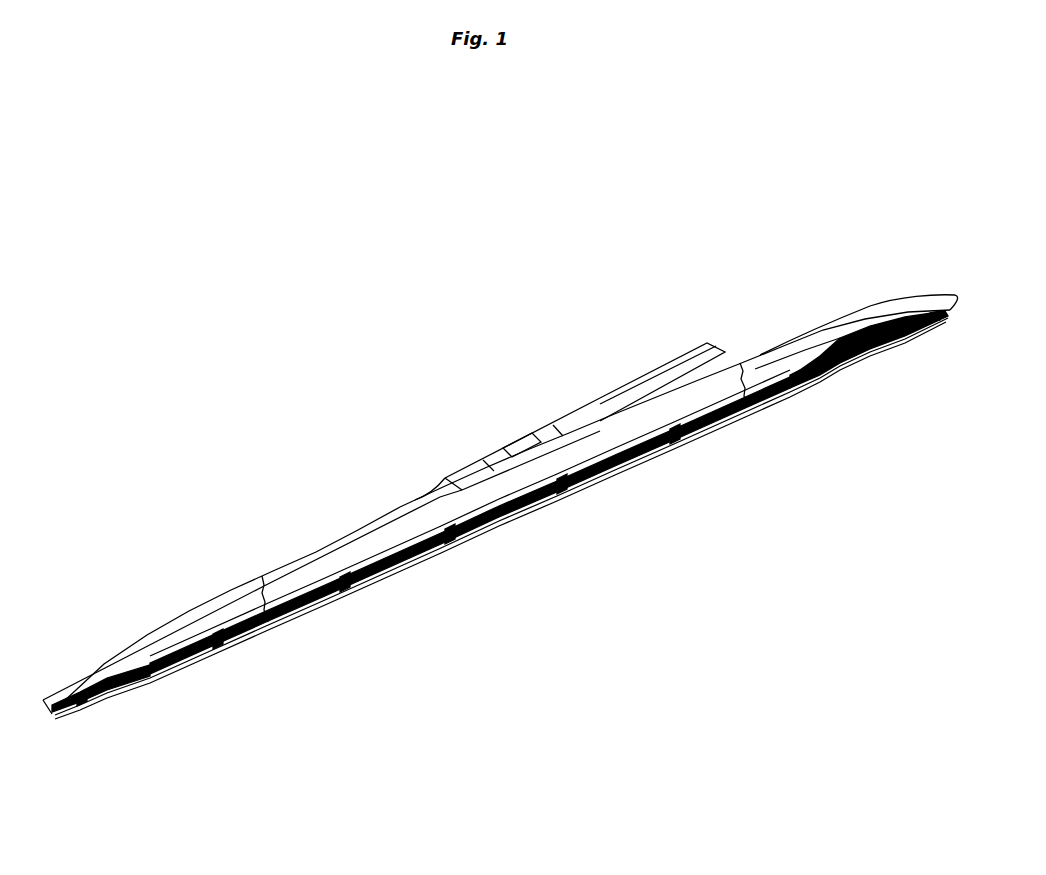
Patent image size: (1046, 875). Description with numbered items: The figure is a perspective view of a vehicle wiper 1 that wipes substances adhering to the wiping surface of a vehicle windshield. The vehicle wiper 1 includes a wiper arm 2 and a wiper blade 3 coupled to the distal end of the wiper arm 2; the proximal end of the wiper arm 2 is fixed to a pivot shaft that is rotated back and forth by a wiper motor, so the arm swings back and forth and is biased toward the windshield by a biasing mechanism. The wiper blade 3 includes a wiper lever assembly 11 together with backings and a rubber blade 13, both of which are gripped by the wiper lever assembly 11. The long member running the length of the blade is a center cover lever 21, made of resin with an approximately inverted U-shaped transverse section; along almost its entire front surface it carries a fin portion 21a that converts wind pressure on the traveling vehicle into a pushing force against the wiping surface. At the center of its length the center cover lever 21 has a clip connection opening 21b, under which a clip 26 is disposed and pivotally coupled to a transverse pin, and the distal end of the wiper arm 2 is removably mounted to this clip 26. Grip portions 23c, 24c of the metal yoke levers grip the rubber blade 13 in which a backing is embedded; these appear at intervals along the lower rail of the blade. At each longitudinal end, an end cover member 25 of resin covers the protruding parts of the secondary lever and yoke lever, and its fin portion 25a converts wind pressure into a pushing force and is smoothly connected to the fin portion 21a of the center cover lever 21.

The vehicle wiper 1 is at (405, 388).
The wiper arm 2 is at (622, 385).
The wiper blade 3 is at (375, 492).
The wiper lever assembly 11 is at (330, 547).
The rubber blade 13 is at (140, 690).
The center cover lever 21 is at (420, 496).
The fin portion 21a is at (294, 566).
The clip connection opening 21b is at (491, 455).
The grip portion 23c is at (82, 706).
The grip portion 24c is at (346, 586).
The end cover member 25 is at (188, 611).
The fin portion 25a is at (137, 652).
The clip 26 is at (510, 446).